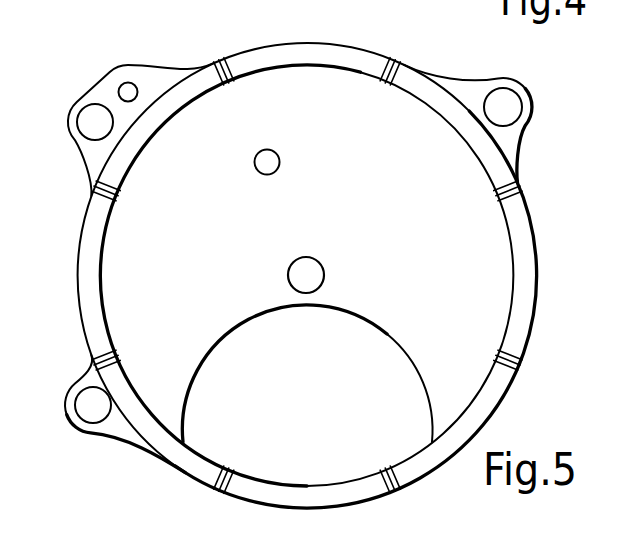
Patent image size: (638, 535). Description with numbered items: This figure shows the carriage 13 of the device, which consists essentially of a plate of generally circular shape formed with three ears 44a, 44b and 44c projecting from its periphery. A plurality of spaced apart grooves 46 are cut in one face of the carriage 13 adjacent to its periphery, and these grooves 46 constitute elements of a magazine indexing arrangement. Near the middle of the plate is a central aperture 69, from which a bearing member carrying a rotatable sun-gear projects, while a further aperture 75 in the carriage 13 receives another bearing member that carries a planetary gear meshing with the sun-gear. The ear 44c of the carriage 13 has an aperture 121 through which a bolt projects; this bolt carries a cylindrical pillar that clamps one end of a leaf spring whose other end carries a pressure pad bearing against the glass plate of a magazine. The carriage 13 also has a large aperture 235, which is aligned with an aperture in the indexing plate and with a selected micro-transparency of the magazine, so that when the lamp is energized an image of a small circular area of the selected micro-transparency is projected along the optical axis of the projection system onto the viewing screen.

The carriage 13 is at (163, 455).
The ear 44a is at (127, 58).
The ear 44b is at (80, 425).
The ear 44c is at (487, 109).
The grooves 46 is at (396, 62).
The central aperture 69 is at (318, 263).
The aperture 75 is at (266, 156).
The aperture 121 is at (493, 98).
The aperture 235 is at (408, 360).